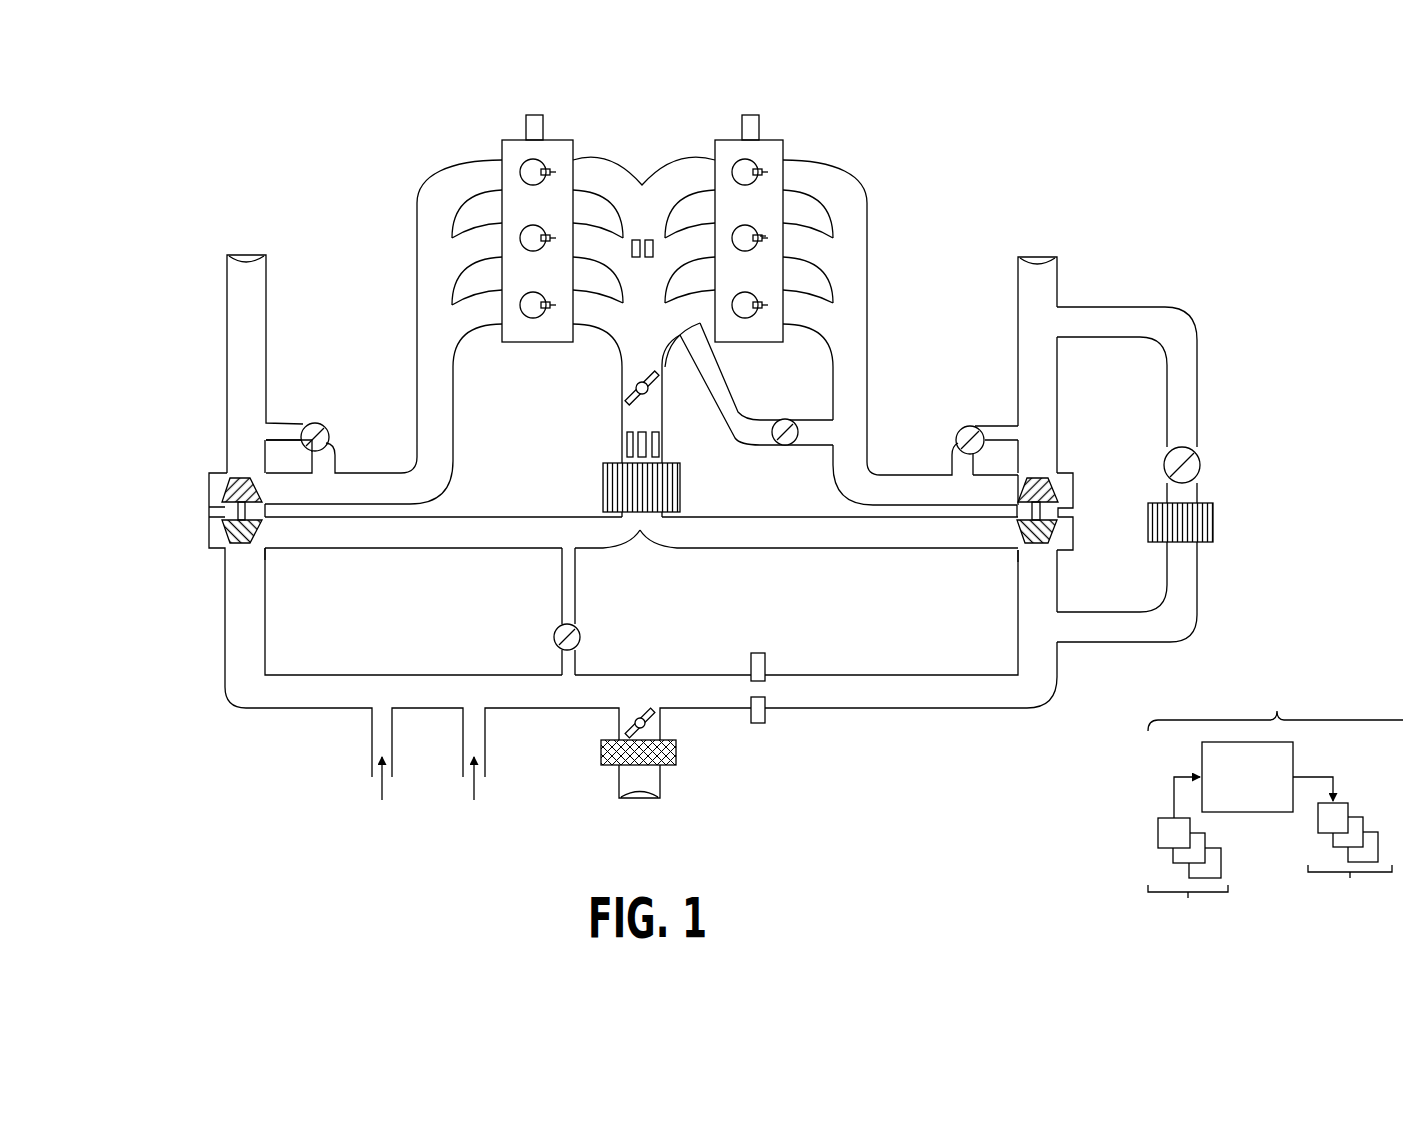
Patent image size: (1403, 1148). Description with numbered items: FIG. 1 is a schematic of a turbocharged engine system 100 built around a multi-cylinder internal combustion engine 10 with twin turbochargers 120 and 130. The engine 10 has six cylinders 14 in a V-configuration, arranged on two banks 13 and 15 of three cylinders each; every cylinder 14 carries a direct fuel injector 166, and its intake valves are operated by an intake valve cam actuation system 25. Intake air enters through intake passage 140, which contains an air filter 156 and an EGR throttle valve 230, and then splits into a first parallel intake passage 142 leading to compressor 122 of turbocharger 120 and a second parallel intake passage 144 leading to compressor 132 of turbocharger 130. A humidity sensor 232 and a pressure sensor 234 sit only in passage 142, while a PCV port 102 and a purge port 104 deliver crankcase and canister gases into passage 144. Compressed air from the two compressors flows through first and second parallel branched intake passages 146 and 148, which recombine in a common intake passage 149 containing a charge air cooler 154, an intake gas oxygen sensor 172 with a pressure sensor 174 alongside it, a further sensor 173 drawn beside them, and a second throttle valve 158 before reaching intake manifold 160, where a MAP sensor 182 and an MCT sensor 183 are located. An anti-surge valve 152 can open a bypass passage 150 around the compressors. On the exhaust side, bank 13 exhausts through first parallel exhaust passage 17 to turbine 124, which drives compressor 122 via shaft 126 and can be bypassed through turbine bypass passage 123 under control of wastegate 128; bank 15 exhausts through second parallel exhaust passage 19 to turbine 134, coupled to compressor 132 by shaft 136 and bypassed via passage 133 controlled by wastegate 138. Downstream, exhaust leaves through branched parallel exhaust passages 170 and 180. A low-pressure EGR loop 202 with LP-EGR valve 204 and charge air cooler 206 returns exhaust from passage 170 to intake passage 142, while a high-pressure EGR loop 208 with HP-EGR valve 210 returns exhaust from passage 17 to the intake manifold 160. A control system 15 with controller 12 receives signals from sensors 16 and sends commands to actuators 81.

The internal combustion engine 10 is at (1022, 141).
The turbocharged engine system 100 is at (1314, 139).
The controller 12 is at (1247, 777).
The first cylinder bank 13 is at (772, 141).
The cylinder 14 is at (757, 237).
The second cylinder bank / control system 15 is at (514, 141).
The sensors 16 is at (1188, 859).
The first parallel exhaust passage 17 is at (868, 403).
The second parallel exhaust passage 19 is at (417, 396).
The intake valve cam actuation system 25 is at (536, 115).
The actuators 81 is at (1342, 849).
The PCV port 102 is at (372, 760).
The purge port 104 is at (465, 758).
The turbocharger 120 is at (1039, 465).
The compressor 122 is at (1030, 547).
The turbine bypass passage 123 is at (1007, 424).
The exhaust turbine 124 is at (1057, 481).
The shaft 126 is at (1043, 513).
The wastegate 128 is at (958, 432).
The turbocharger 130 is at (244, 460).
The compressor 132 is at (250, 543).
The turbine bypass passage 133 is at (286, 421).
The exhaust turbine 134 is at (228, 484).
The shaft 136 is at (225, 522).
The wastegate 138 is at (328, 429).
The intake passage 140 is at (619, 785).
The first parallel intake passage 142 is at (825, 675).
The second parallel intake passage 144 is at (400, 675).
The first parallel branched intake passage 146 is at (820, 553).
The second parallel branched intake passage 148 is at (372, 550).
The common intake passage 149 is at (621, 371).
The bypass passage 150 is at (576, 592).
The anti-surge valve 152 is at (580, 636).
The charge air cooler 154 is at (682, 486).
The air filter 156 is at (678, 751).
The second air intake throttle valve 158 is at (632, 372).
The intake manifold 160 is at (640, 158).
The fuel injector 166 is at (762, 239).
The first branched parallel exhaust passage 170 is at (1018, 298).
The intake gas oxygen sensor 172 is at (627, 441).
The exhaust sensor 173 is at (642, 431).
The pressure sensor 174 is at (658, 432).
The second branched parallel exhaust passage 180 is at (267, 304).
The intake manifold pressure sensor 182 is at (634, 258).
The intake manifold temperature sensor 183 is at (648, 258).
The low-pressure EGR loop 202 is at (1198, 381).
The LP-EGR valve 204 is at (1199, 452).
The charge air cooler 206 is at (1208, 502).
The high-pressure EGR loop 208 is at (752, 446).
The HP-EGR valve 210 is at (786, 418).
The EGR throttle valve 230 is at (632, 716).
The humidity sensor 232 is at (758, 653).
The pressure sensor 234 is at (760, 723).